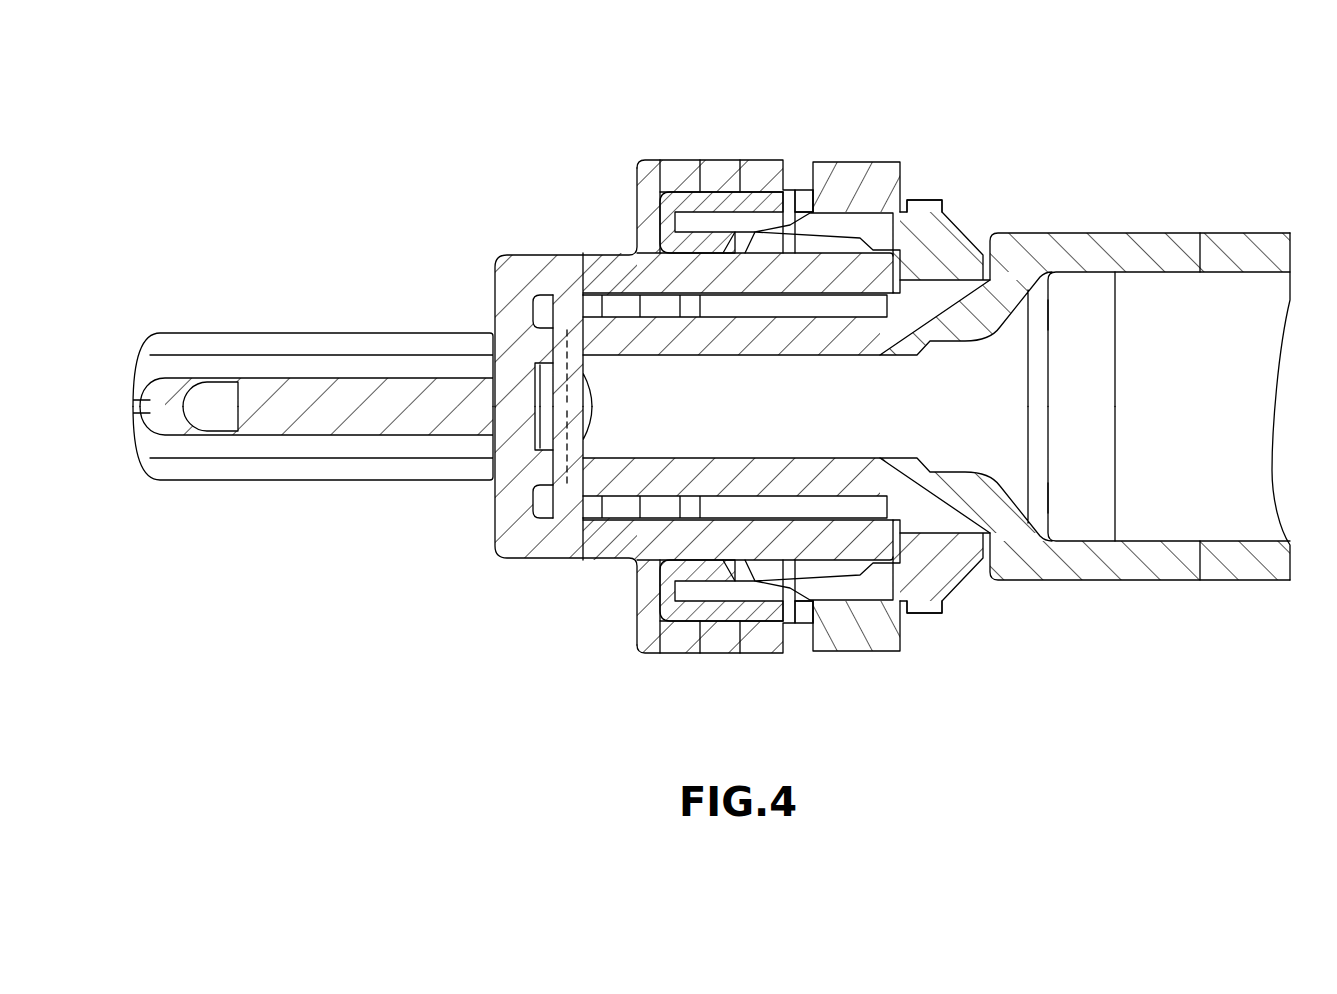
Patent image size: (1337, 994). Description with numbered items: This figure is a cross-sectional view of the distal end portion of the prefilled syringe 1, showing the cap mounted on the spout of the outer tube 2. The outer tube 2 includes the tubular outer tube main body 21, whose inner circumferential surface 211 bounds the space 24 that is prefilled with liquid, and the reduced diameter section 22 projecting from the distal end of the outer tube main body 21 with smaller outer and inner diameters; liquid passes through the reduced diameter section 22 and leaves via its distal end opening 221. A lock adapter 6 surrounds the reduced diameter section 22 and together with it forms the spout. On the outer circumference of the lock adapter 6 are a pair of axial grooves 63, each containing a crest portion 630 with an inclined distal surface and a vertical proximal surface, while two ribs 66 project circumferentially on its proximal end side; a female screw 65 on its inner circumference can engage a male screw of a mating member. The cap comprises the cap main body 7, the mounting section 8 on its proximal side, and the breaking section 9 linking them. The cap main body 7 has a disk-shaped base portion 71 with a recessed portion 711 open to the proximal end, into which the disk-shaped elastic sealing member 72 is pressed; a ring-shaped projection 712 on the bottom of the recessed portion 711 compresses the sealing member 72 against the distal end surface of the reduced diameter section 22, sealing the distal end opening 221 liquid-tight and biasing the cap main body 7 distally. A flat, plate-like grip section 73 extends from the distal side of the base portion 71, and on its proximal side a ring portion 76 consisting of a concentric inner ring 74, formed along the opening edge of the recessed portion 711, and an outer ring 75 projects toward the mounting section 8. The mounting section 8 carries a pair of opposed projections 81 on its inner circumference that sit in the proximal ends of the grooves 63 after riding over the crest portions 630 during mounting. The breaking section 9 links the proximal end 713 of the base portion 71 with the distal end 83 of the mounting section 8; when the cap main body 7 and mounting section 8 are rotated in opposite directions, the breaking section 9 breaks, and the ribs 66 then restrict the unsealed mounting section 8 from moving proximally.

The syringe 1 is at (711, 383).
The syringe outer tube 2 is at (1133, 228).
The outer tube main body 21 is at (1213, 255).
The inner circumferential surface 211 is at (1220, 540).
The space 24 is at (1147, 545).
The lock adapter 6 is at (958, 625).
The ribs 66 is at (925, 200).
The female screw 65 is at (867, 247).
The grooves 63 is at (731, 196).
The crest portion 630 is at (800, 205).
The cap main body 7 is at (673, 640).
The base portion 71 is at (552, 270).
The recessed portion 711 is at (540, 510).
The ring-shaped projection 712 is at (540, 467).
The proximal end 713 is at (790, 190).
The sealing member 72 is at (568, 355).
The grip section 73 is at (358, 358).
The inner ring 74 is at (716, 625).
The outer ring 75 is at (729, 637).
The ring portion 76 is at (665, 709).
The mounting section 8 is at (887, 645).
The projections 81 is at (835, 205).
The distal end 83 is at (806, 188).
The breaking section 9 is at (826, 668).
The reduced diameter section 22 is at (677, 473).
The distal end opening 221 is at (567, 483).